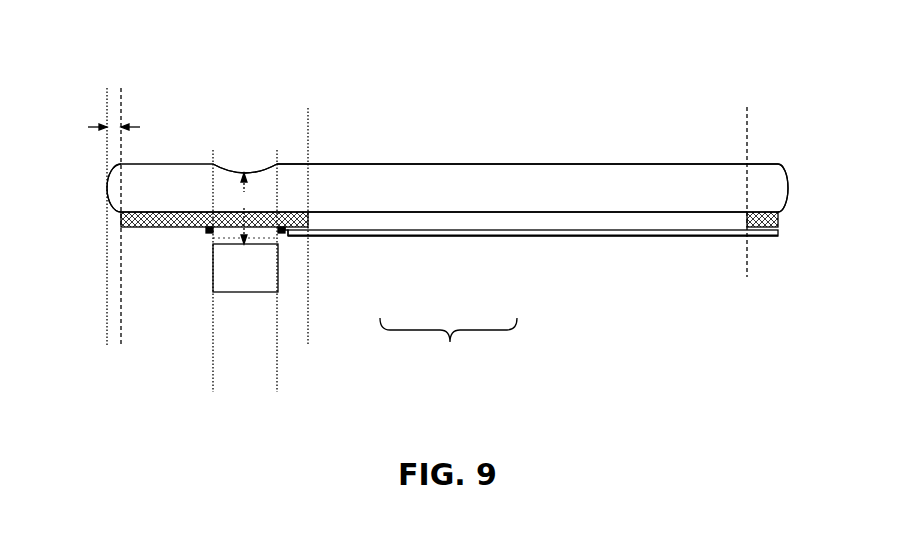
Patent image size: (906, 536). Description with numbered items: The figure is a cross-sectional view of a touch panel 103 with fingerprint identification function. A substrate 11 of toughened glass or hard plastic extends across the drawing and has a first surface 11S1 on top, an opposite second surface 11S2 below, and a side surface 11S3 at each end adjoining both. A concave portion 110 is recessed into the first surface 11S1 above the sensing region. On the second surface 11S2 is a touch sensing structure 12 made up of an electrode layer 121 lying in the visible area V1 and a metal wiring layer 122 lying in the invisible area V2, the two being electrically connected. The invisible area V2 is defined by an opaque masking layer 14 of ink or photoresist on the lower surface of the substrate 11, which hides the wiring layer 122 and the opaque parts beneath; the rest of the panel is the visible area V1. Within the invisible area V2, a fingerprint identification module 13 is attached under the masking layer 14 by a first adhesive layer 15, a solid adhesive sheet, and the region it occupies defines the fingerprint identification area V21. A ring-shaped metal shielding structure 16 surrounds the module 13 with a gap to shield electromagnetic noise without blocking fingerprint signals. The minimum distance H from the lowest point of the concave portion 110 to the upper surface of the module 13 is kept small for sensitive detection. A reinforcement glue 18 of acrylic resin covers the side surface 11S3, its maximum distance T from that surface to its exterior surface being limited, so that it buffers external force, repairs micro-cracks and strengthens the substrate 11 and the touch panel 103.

The touch panel 103 is at (107, 45).
The substrate 11 is at (687, 187).
The concave portion 110 is at (232, 168).
The first surface 11S1 is at (382, 163).
The second surface 11S2 is at (598, 212).
The side surface 11S3 is at (781, 165).
The touch sensing structure 12 is at (448, 355).
The electrode layer 121 is at (532, 224).
The wiring layer 122 is at (300, 238).
The fingerprint identification module 13 is at (245, 280).
The masking layer 14 is at (121, 218).
The first adhesive layer 15 is at (242, 240).
The shielding structure 16 is at (206, 231).
The reinforcement glue 18 is at (107, 190).
The maximum distance T is at (114, 110).
The minimum distance H is at (244, 208).
The visible area V1 is at (526, 113).
The invisible area V2 is at (201, 114).
The fingerprint identification area V21 is at (246, 379).